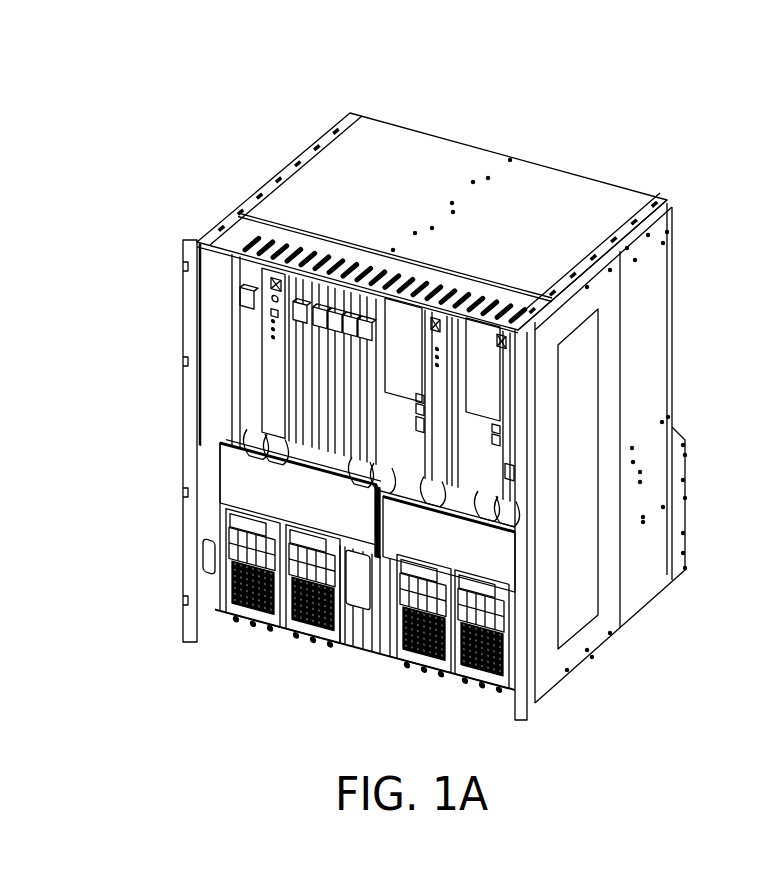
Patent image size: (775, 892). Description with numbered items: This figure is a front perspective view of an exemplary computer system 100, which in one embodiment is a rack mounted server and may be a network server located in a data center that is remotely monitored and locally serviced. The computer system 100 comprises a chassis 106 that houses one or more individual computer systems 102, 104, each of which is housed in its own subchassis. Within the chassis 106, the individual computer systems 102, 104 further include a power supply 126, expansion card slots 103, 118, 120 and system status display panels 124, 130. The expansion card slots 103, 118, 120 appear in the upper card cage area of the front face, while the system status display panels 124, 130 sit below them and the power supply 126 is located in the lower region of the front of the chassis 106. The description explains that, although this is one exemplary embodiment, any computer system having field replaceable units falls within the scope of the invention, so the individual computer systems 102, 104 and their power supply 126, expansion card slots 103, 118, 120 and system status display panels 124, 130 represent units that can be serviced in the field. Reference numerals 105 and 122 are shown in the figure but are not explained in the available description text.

The computer system 100 is at (256, 144).
The individual computer system 102 is at (263, 652).
The expansion card slot 103 is at (253, 344).
The individual computer system 104 is at (377, 676).
The air vent 105 is at (228, 211).
The chassis 106 is at (627, 189).
The expansion card slot 118 is at (398, 358).
The expansion card slot 120 is at (420, 413).
The latch 122 is at (513, 472).
The system status display panel 124 is at (253, 487).
The power supply 126 is at (247, 577).
The system status display panel 130 is at (430, 538).